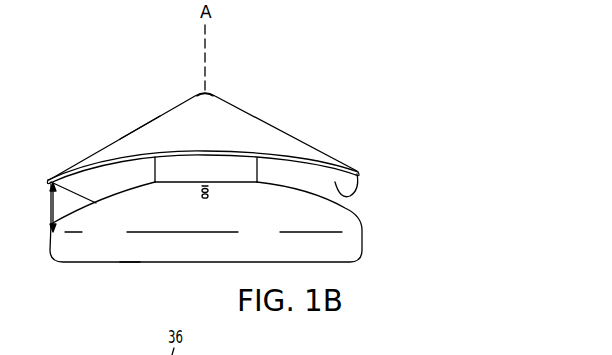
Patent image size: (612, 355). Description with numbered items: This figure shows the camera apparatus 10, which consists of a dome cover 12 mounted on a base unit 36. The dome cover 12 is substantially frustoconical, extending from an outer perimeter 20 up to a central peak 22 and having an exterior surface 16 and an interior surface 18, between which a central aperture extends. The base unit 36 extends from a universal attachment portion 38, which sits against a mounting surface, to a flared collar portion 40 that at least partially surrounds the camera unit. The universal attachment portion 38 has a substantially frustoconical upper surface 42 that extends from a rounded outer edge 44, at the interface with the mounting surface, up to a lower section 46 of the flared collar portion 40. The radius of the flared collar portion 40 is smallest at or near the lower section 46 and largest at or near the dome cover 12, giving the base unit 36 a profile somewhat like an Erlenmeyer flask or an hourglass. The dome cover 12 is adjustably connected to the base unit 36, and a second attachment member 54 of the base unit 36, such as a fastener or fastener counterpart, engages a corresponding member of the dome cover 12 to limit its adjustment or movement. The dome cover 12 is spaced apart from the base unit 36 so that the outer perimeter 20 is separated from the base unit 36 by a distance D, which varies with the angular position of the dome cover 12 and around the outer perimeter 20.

The camera apparatus 10 is at (284, 108).
The dome cover 12 is at (306, 137).
The exterior surface 16 is at (157, 125).
The interior surface 18 is at (313, 218).
The outer perimeter 20 is at (356, 172).
The central peak 22 is at (212, 97).
The base unit 36 is at (359, 241).
The universal attachment portion 38 is at (128, 263).
The flared collar portion 40 is at (167, 165).
The frustoconical upper surface 42 is at (314, 206).
The rounded outer edge 44 is at (51, 241).
The lower section 46 is at (156, 181).
The second attachment member 54 is at (213, 193).
The distance D is at (51, 207).